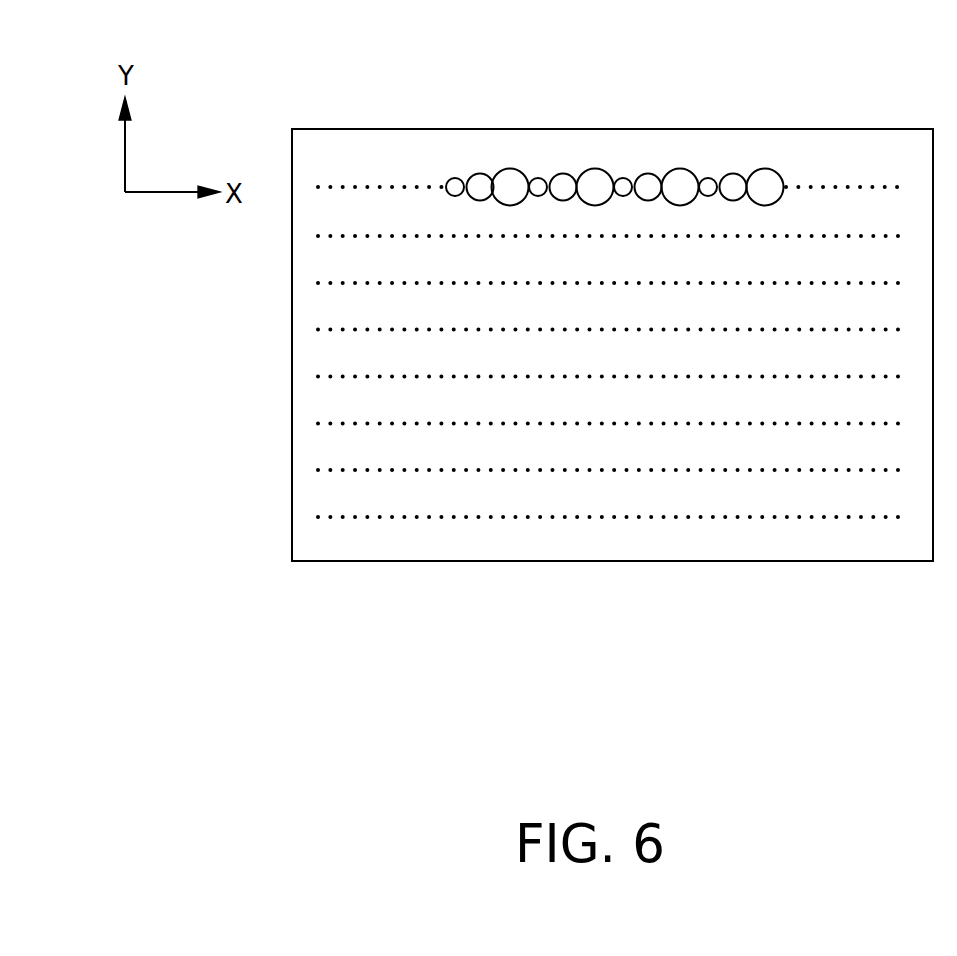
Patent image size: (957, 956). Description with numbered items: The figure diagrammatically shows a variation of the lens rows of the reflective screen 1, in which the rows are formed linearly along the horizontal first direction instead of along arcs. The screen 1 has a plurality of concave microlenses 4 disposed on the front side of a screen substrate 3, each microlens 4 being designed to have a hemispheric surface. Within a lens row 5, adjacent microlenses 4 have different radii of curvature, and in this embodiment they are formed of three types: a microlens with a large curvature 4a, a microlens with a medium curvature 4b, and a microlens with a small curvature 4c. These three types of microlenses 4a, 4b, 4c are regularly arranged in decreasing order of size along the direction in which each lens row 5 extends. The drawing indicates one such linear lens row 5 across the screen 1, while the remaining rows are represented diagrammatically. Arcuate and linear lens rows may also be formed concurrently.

The reflective screen 1 is at (277, 387).
The screen substrate 3 is at (327, 262).
The concave microlenses 4 is at (616, 119).
The microlens with a large curvature 4a is at (679, 168).
The microlens with a medium curvature 4b is at (647, 173).
The microlens with a small curvature 4c is at (623, 177).
The lens row 5 is at (645, 119).